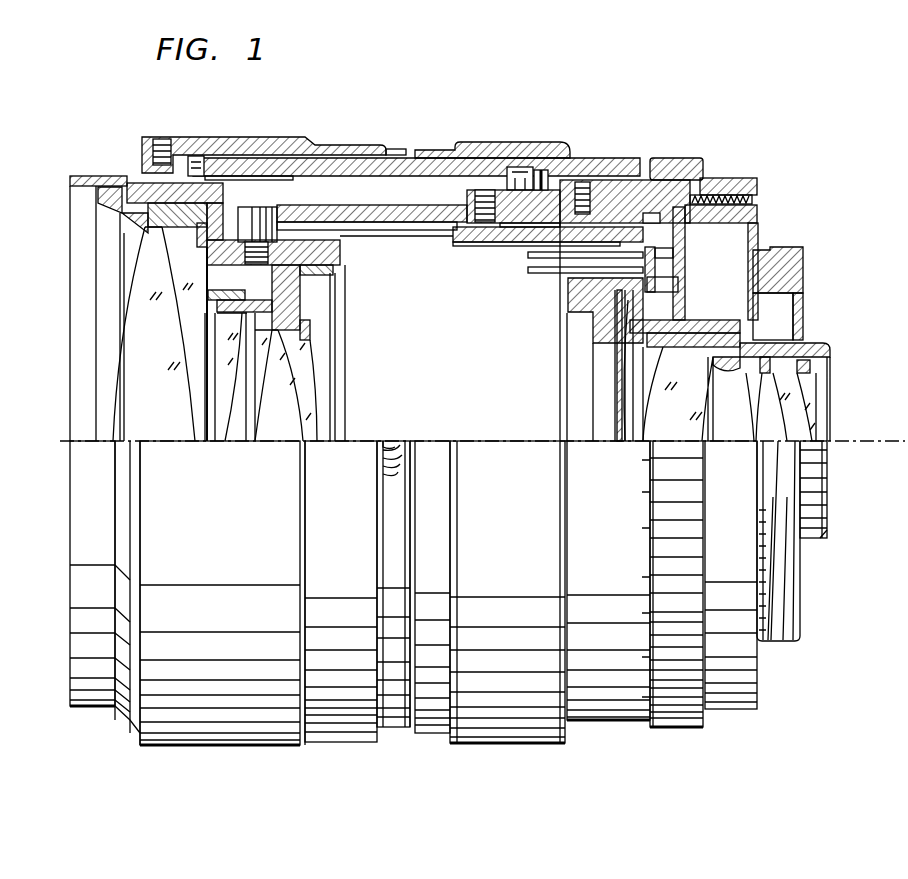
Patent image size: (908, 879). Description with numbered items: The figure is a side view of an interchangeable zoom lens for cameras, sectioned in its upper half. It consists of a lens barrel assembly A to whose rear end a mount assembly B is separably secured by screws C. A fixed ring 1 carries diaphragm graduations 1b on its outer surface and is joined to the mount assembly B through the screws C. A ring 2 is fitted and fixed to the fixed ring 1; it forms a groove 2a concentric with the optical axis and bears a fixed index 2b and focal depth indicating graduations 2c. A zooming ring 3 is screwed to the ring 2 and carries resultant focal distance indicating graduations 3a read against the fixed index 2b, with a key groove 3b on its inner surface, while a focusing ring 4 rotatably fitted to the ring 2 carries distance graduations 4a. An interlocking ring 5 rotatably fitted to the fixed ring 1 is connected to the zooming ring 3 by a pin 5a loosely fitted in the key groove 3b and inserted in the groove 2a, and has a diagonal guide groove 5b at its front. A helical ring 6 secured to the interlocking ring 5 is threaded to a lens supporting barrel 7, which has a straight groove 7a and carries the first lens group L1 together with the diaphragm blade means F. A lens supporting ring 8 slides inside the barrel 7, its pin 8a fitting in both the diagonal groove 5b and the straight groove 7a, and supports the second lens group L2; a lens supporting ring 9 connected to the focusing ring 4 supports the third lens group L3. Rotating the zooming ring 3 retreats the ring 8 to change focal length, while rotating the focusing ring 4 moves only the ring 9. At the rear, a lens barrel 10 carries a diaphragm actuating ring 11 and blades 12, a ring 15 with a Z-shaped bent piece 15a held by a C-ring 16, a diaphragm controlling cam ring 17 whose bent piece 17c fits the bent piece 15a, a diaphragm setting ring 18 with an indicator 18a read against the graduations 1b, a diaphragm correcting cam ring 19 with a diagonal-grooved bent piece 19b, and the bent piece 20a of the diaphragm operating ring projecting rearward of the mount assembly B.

The fixed ring 1 is at (641, 187).
The diaphragm graduations 1b is at (641, 702).
The ring 2 is at (609, 163).
The groove 2a is at (533, 180).
The fixed index 2b is at (393, 440).
The focal depth indicating graduations 2c is at (389, 480).
The zooming ring 3 is at (462, 144).
The resultant focal distance indicating graduations 3a is at (435, 538).
The key groove 3b is at (511, 168).
The focusing ring 4 is at (282, 137).
The distance graduations 4a is at (350, 743).
The interlocking ring 5 is at (365, 192).
The pin 5a is at (492, 192).
The guide groove 5b is at (270, 208).
The helical ring 6 is at (499, 236).
The lens supporting barrel 7 is at (469, 243).
The straight groove 7a is at (405, 236).
The lens supporting ring 8 is at (341, 245).
The pin 8a is at (255, 265).
The lens supporting ring 9 is at (80, 176).
The lens barrel 10 is at (730, 323).
The diaphragm actuating ring 11 is at (600, 323).
The blades 12 is at (626, 373).
The ring 15 is at (670, 293).
The bent piece 15a is at (653, 241).
The C-ring 16 is at (693, 340).
The diaphragm controlling cam ring 17 is at (651, 272).
The bent piece 17c is at (529, 272).
The diaphragm setting ring 18 is at (685, 161).
The indicator 18a is at (662, 459).
The diaphragm correcting cam ring 19 is at (676, 290).
The bent piece 19b is at (529, 256).
The bent piece 20a is at (803, 463).
The lens barrel assembly A is at (400, 153).
The mount assembly B is at (748, 178).
The screws C is at (757, 198).
The diaphragm blade means F is at (614, 404).
The first lens group L1 is at (743, 431).
The second lens group L2 is at (286, 429).
The third lens group L3 is at (170, 427).